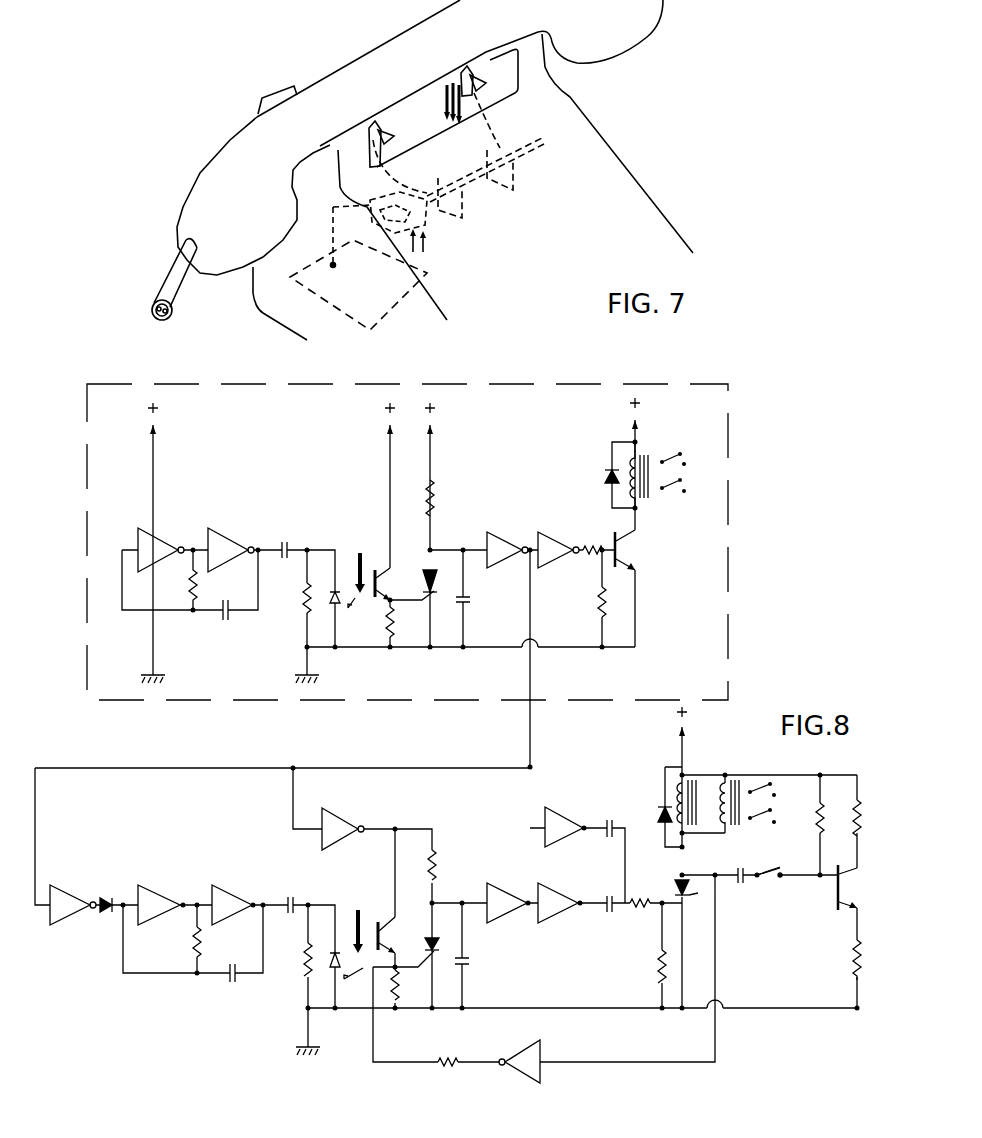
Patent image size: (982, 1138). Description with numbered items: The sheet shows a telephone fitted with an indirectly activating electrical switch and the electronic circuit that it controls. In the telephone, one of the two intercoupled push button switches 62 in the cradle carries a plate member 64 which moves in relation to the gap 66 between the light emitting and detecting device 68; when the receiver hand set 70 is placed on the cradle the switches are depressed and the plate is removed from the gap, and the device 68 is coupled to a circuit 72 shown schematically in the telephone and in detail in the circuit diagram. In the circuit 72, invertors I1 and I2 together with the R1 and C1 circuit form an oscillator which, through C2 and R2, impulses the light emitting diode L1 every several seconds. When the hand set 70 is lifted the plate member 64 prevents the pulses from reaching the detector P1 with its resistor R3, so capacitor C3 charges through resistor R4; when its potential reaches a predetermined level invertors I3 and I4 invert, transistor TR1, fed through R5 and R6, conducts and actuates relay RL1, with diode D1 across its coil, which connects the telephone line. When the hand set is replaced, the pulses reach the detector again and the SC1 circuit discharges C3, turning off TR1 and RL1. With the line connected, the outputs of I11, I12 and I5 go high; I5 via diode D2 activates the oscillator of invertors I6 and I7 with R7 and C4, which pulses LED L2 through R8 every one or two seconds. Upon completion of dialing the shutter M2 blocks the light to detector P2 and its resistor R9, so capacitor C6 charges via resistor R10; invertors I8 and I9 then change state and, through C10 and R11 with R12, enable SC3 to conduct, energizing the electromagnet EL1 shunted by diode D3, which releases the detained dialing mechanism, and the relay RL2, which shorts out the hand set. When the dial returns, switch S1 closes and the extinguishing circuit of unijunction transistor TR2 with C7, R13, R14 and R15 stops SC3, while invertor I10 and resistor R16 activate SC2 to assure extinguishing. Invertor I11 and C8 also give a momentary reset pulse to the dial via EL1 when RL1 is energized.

In FIG. 7, the receiver hand set 70 is at (357, 93).
In FIG. 7, the push button switch 62 is at (453, 85).
In FIG. 7, the plate member 64 is at (430, 213).
In FIG. 8, the plate member 64 is at (358, 552).
In FIG. 7, the gap 66 is at (403, 227).
In FIG. 7, the light emitting and detecting device 68 is at (372, 207).
In FIG. 7, the circuit 72 is at (365, 288).
In FIG. 8, the circuit 72 is at (700, 548).
In FIG. 8, the invertor I1 is at (158, 543).
In FIG. 8, the invertor I2 is at (220, 543).
In FIG. 8, the invertor I3 is at (495, 543).
In FIG. 8, the invertor I4 is at (545, 543).
In FIG. 8, the invertor I5 is at (57, 898).
In FIG. 8, the invertor I6 is at (148, 898).
In FIG. 8, the invertor I7 is at (217, 898).
In FIG. 8, the invertor I8 is at (490, 898).
In FIG. 8, the invertor I9 is at (543, 898).
In FIG. 8, the invertor I10 is at (519, 1056).
In FIG. 8, the invertor I11 is at (552, 823).
In FIG. 8, the invertor I12 is at (325, 823).
In FIG. 8, the resistor R1 is at (211, 580).
In FIG. 8, the resistor R2 is at (291, 607).
In FIG. 8, the resistor R3 is at (406, 622).
In FIG. 8, the resistor R4 is at (448, 498).
In FIG. 8, the resistor R5 is at (596, 536).
In FIG. 8, the resistor R6 is at (617, 607).
In FIG. 8, the resistor R7 is at (214, 946).
In FIG. 8, the resistor R8 is at (294, 966).
In FIG. 8, the resistor R9 is at (410, 990).
In FIG. 8, the resistor R10 is at (455, 872).
In FIG. 8, the resistor R11 is at (651, 891).
In FIG. 8, the resistor R12 is at (643, 974).
In FIG. 8, the resistor R13 is at (803, 824).
In FIG. 8, the resistor R14 is at (878, 822).
In FIG. 8, the resistor R15 is at (877, 966).
In FIG. 8, the resistor R16 is at (457, 1076).
In FIG. 8, the capacitor C1 is at (233, 623).
In FIG. 8, the capacitor C2 is at (286, 537).
In FIG. 8, the capacitor C3 is at (478, 612).
In FIG. 8, the capacitor C4 is at (236, 987).
In FIG. 8, the capacitor C6 is at (478, 974).
In FIG. 8, the capacitor C7 is at (739, 890).
In FIG. 8, the capacitor C8 is at (607, 816).
In FIG. 8, the capacitor C10 is at (615, 916).
In FIG. 8, the diode D1 is at (604, 475).
In FIG. 8, the diode D2 is at (102, 891).
In FIG. 8, the diode D3 is at (652, 806).
In FIG. 8, the light emitting diode L1 is at (347, 615).
In FIG. 8, the LED L2 is at (347, 981).
In FIG. 8, the detector P1 is at (399, 579).
In FIG. 8, the detector P2 is at (398, 935).
In FIG. 8, the shutter M2 is at (357, 918).
In FIG. 8, the SC1 circuit SC1 is at (447, 605).
In FIG. 8, the element SC2 is at (437, 943).
In FIG. 8, the element SC3 is at (690, 893).
In FIG. 8, the transistor TR1 is at (646, 550).
In FIG. 8, the unijunction transistor TR2 is at (867, 887).
In FIG. 8, the relay RL1 is at (659, 463).
In FIG. 8, the relay RL2 is at (748, 789).
In FIG. 8, the electromagnet EL1 is at (701, 784).
In FIG. 8, the switch S1 is at (776, 887).